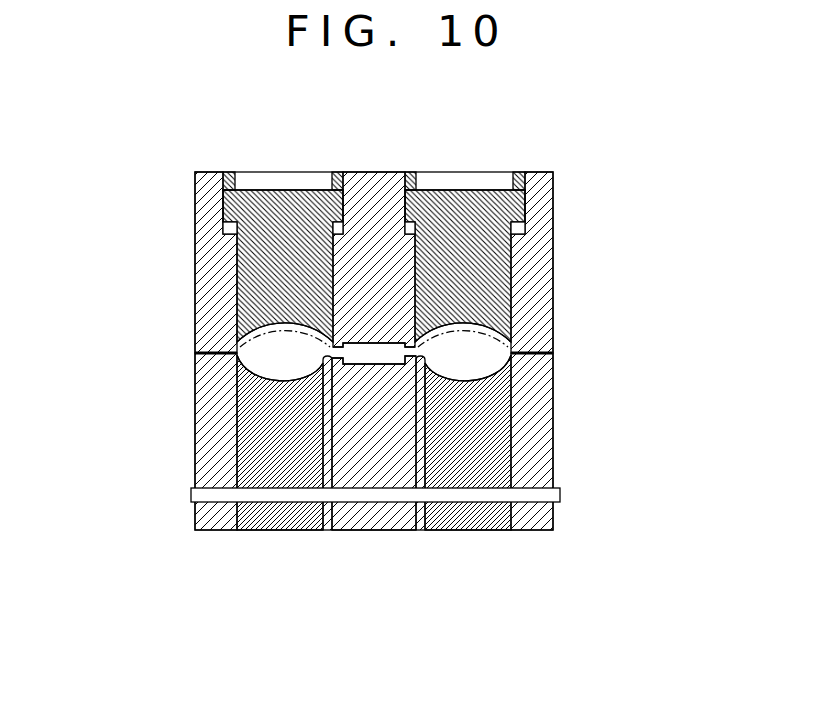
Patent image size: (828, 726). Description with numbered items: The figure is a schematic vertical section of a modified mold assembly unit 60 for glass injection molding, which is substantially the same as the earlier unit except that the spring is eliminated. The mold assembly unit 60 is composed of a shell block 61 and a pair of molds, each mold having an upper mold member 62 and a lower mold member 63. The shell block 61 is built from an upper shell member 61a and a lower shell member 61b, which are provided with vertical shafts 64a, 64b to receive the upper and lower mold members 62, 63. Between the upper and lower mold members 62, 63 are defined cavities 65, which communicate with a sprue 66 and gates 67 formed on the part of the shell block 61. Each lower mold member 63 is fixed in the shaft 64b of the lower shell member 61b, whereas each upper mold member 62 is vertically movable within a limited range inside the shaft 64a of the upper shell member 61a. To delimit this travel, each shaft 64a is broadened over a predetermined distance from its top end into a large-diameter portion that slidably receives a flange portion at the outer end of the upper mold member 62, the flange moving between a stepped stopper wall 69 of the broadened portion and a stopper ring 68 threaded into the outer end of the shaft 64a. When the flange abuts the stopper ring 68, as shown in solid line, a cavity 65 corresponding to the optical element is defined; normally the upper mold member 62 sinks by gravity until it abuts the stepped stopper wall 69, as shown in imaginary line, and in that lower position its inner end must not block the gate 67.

The mold assembly unit 60 is at (562, 183).
The shell block 61 is at (566, 524).
The upper shell member 61a is at (210, 237).
The lower shell member 61b is at (545, 389).
The upper mold member 62 is at (268, 203).
The lower mold member 63 is at (291, 502).
The vertical shaft of upper shell member 64a is at (246, 295).
The vertical shaft of lower shell member 64b is at (246, 467).
The cavity 65 is at (248, 360).
The sprue 66 is at (373, 360).
The gate 67 is at (326, 366).
The stopper ring 68 is at (226, 172).
The stepped stopper wall 69 is at (225, 228).